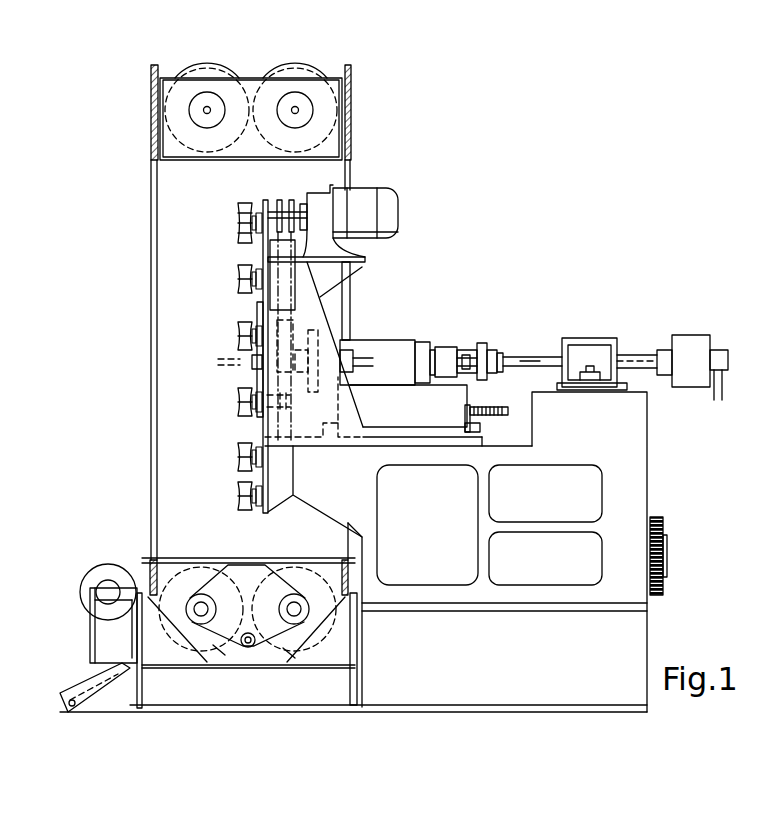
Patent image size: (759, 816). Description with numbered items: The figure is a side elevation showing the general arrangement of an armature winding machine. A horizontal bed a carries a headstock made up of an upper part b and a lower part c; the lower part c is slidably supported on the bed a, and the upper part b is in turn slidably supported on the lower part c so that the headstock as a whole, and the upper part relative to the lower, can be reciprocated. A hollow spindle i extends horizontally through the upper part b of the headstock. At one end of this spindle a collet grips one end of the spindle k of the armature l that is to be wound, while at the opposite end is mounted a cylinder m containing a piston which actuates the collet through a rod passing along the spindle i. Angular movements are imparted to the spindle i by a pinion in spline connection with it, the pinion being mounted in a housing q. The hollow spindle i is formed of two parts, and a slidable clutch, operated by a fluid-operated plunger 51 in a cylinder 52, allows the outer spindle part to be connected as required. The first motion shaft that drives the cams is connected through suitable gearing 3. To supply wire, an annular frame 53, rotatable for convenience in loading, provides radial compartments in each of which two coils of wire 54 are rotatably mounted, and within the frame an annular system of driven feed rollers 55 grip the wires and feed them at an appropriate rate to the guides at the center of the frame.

The coils of wire 54 is at (290, 73).
The annular frame 53 is at (151, 248).
The driven feed rollers 55 is at (238, 232).
The spindle of the armature k is at (232, 362).
The armature l is at (240, 370).
The upper part of the headstock b is at (392, 347).
The cylinder 52 is at (442, 353).
The plunger 51 is at (467, 368).
The lower part of the headstock c is at (462, 400).
The horizontal bed a is at (500, 457).
The hollow spindle i is at (520, 362).
The housing q is at (595, 346).
The cylinder m is at (688, 340).
The gearing 3 is at (657, 520).